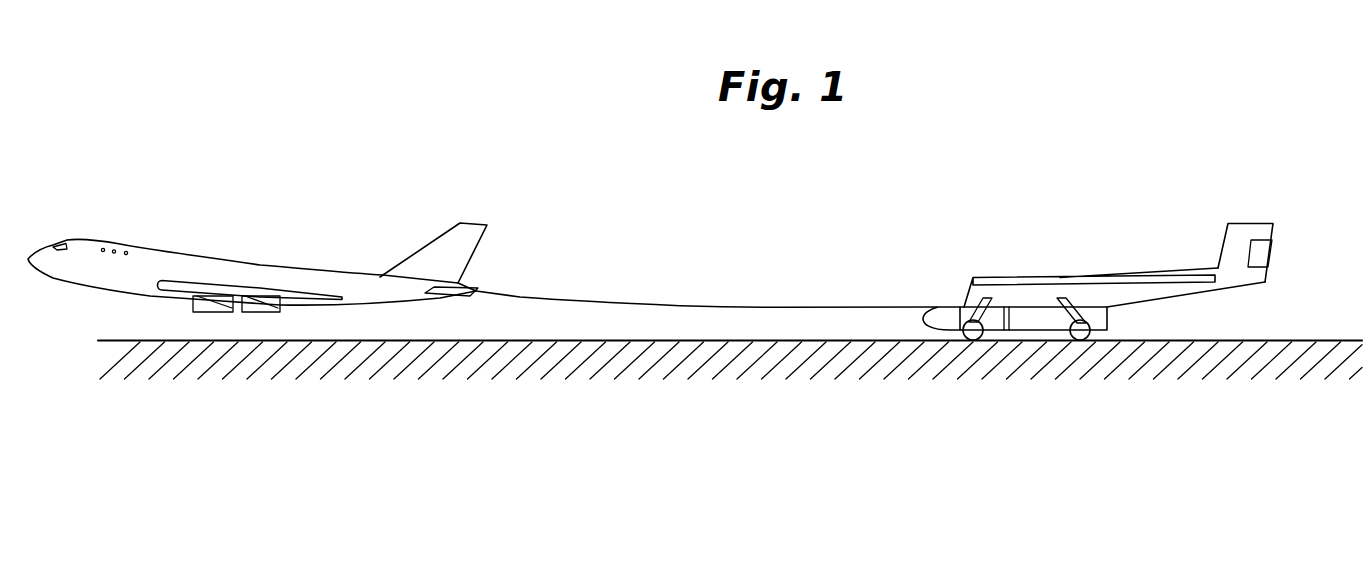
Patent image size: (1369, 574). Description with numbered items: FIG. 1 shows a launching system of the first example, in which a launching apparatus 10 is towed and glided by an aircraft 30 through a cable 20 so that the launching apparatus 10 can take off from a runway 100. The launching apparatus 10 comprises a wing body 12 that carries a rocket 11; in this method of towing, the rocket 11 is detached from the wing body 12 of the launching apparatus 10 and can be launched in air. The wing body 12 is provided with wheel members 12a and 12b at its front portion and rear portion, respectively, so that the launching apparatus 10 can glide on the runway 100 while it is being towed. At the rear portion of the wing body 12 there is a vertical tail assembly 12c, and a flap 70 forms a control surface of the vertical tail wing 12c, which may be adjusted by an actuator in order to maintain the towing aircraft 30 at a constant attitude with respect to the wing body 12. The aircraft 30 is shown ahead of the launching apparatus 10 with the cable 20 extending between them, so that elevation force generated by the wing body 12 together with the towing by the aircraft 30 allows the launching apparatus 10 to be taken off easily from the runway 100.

The launching apparatus 10 is at (1137, 297).
The rocket 11 is at (1033, 323).
The wing body 12 is at (1013, 295).
The wheel member 12a is at (971, 340).
The wheel member 12b is at (1080, 340).
The vertical tail assembly 12c is at (1243, 232).
The cable 20 is at (796, 306).
The aircraft 30 is at (338, 282).
The flap 70 is at (1262, 251).
The runway 100 is at (508, 353).